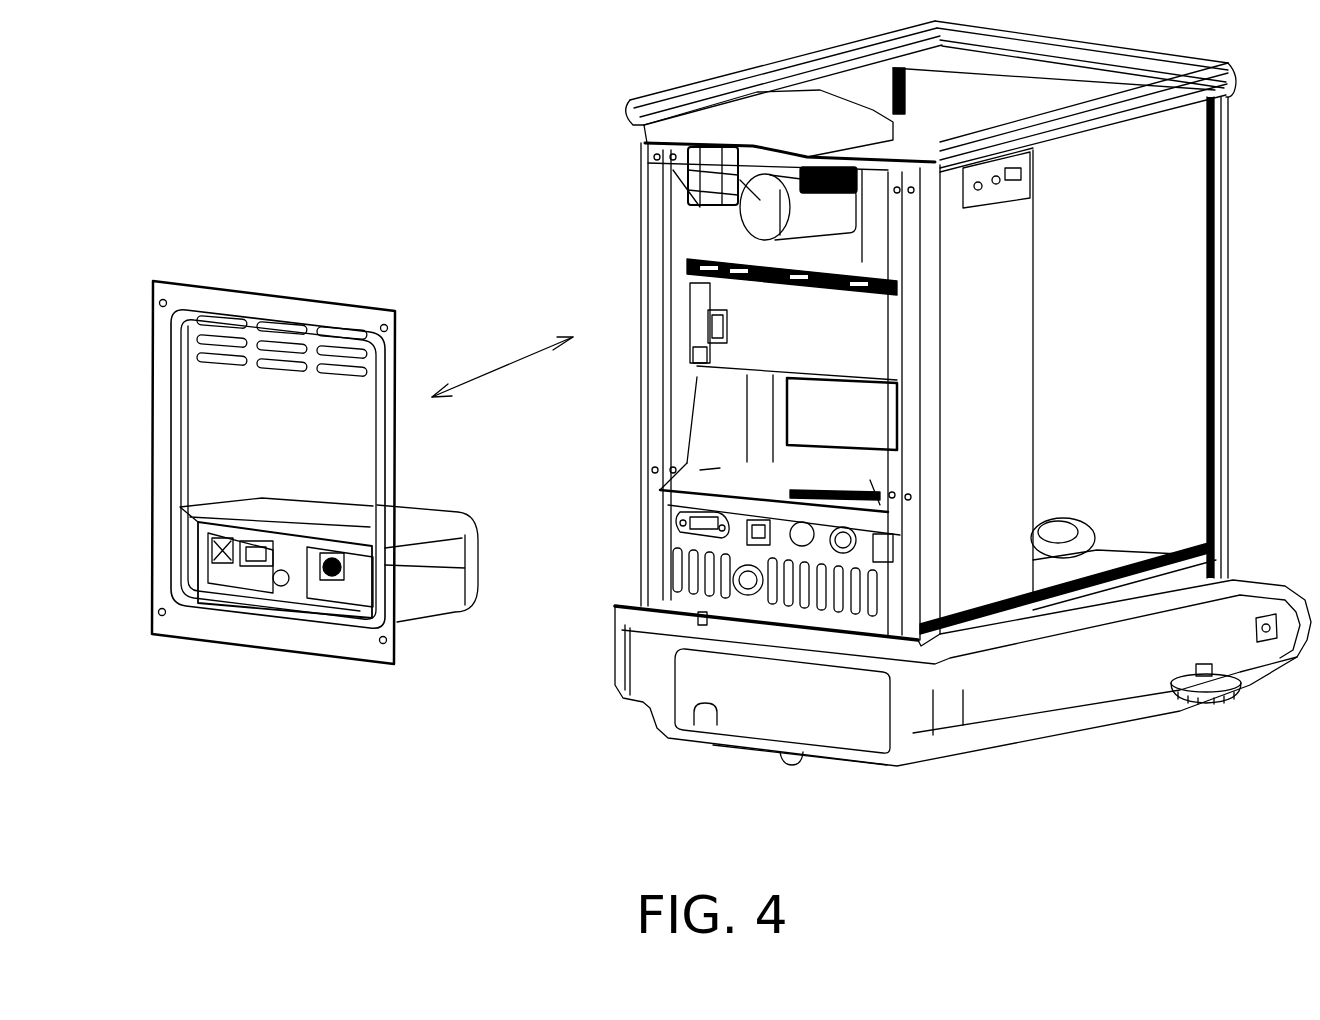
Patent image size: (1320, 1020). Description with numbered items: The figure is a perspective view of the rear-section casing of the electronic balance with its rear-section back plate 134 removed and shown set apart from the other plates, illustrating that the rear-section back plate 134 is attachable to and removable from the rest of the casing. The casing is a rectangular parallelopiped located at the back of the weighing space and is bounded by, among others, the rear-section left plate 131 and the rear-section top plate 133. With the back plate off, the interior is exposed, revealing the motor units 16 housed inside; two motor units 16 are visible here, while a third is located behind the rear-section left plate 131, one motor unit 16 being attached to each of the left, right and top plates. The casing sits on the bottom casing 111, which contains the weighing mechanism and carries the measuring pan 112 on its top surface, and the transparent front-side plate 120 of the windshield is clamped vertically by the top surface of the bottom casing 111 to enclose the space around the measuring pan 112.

The rear-section top plate 133 is at (747, 107).
The rear-section back plate 134 is at (263, 397).
The motor unit 16 is at (827, 203).
The front-side plate 120 is at (1127, 248).
The measuring pan 112 is at (1060, 513).
The rear-section left plate 131 is at (985, 484).
The bottom casing 111 is at (1133, 650).